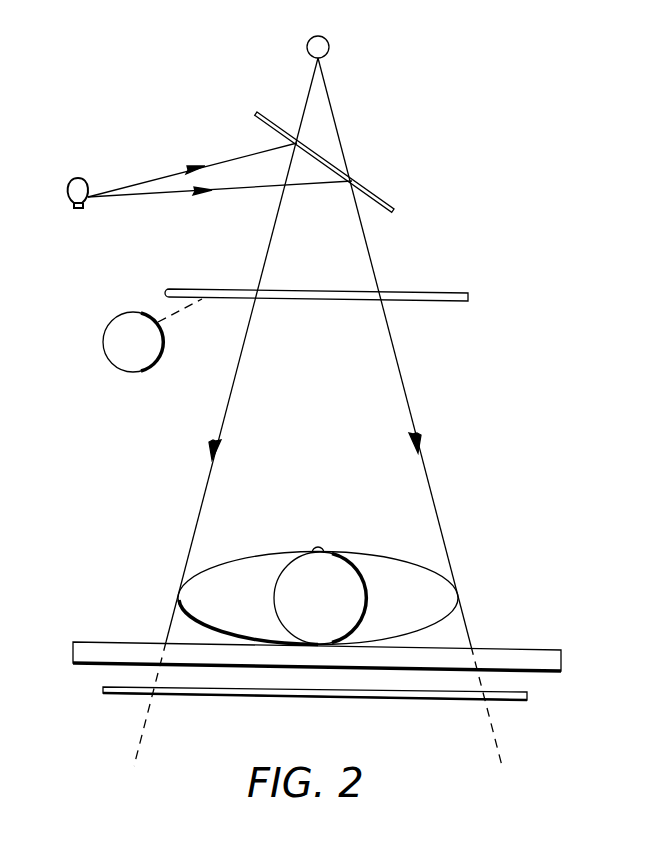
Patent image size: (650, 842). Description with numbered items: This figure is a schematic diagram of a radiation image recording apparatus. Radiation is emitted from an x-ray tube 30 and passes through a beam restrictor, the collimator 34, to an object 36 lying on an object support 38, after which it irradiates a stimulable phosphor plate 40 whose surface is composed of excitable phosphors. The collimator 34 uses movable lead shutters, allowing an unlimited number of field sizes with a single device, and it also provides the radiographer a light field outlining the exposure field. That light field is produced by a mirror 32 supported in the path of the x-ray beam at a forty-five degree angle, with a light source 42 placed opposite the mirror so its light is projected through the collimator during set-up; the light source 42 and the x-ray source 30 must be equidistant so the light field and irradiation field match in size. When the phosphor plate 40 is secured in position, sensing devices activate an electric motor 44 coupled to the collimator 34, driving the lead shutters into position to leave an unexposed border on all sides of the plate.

The x-ray tube 30 is at (329, 47).
The mirror 32 is at (372, 188).
The collimator 34 is at (413, 292).
The object 36 is at (417, 578).
The object support 38 is at (530, 648).
The stimulable phosphor plate 40 is at (127, 695).
The light source 42 is at (82, 178).
The electric motor 44 is at (107, 357).